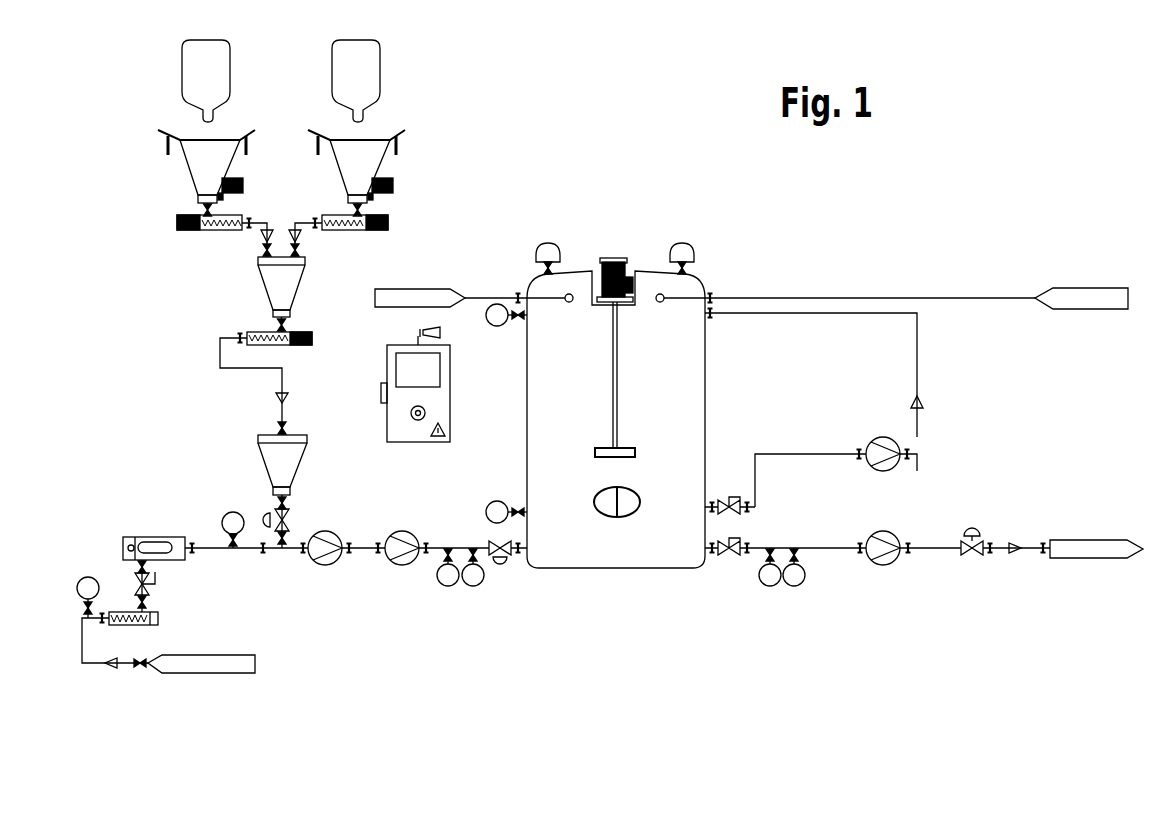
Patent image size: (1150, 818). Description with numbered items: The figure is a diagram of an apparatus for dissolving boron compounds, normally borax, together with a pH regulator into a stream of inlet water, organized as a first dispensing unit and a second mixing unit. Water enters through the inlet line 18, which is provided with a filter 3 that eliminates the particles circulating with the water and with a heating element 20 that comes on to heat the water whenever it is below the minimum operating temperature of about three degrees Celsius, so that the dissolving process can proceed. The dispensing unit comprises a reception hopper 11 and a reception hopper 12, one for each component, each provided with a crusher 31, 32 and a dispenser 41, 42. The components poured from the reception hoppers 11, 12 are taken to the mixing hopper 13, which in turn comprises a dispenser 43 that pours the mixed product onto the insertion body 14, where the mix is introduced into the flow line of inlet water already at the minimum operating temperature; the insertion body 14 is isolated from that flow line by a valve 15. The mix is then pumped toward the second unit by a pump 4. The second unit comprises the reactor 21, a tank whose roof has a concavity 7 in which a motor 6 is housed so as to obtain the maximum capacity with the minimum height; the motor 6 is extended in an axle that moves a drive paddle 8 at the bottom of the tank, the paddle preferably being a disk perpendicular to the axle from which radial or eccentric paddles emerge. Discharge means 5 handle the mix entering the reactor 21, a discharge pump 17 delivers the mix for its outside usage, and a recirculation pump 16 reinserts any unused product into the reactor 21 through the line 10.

The filter 3 is at (160, 618).
The pump 4 is at (332, 562).
The discharge means 5 is at (408, 562).
The motor 6 is at (623, 262).
The concavity 7 is at (597, 262).
The stirrer 8 is at (600, 453).
The line 10 is at (917, 359).
The reception hopper 11 is at (195, 170).
The reception hopper 12 is at (363, 167).
The mixing hopper 13 is at (277, 282).
The insertion body 14 is at (275, 457).
The valve 15 is at (273, 515).
The recirculation pump 16 is at (888, 468).
The discharge pump 17 is at (890, 560).
The inlet line 18 is at (202, 665).
The heating element 20 is at (148, 548).
The reactor 21 is at (680, 370).
The crusher 31 is at (245, 185).
The crusher 32 is at (395, 187).
The dispenser 41 is at (177, 223).
The dispenser 42 is at (388, 223).
The dispenser 43 is at (302, 332).